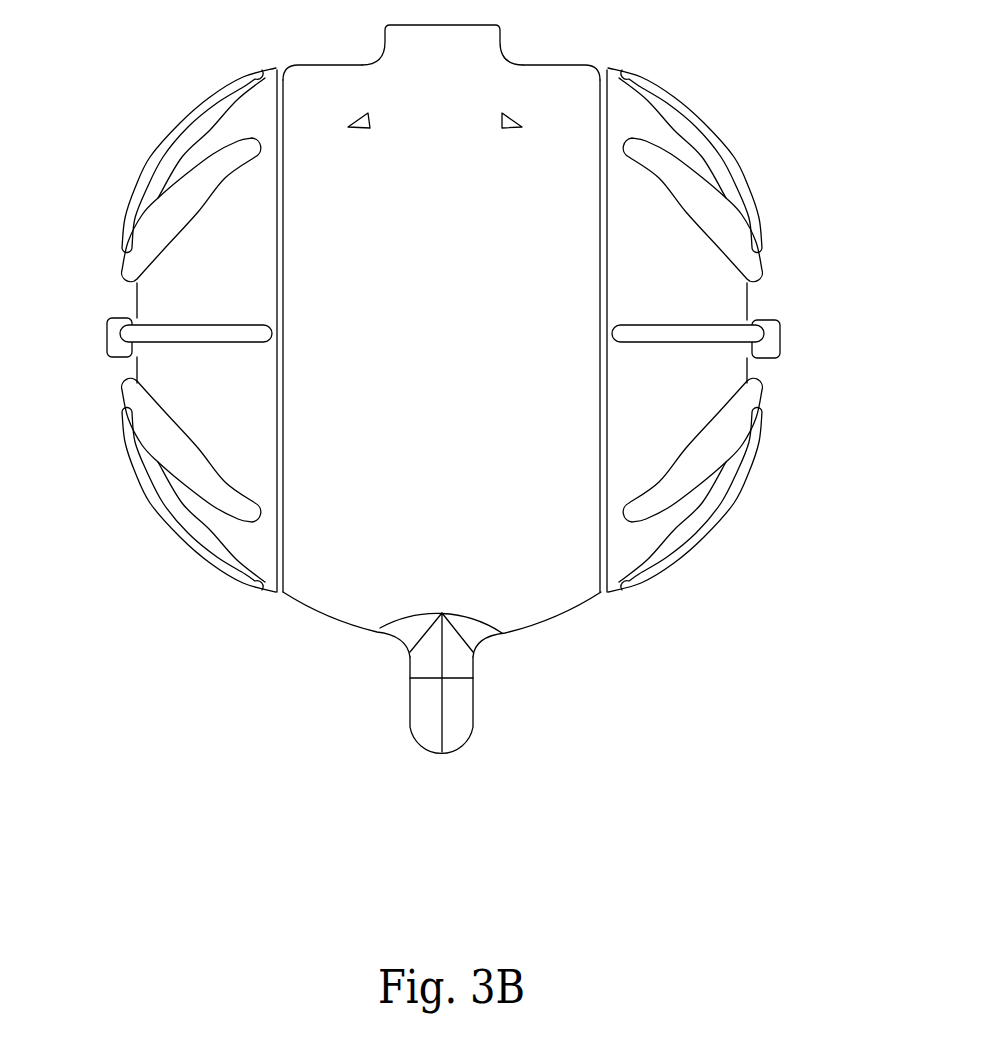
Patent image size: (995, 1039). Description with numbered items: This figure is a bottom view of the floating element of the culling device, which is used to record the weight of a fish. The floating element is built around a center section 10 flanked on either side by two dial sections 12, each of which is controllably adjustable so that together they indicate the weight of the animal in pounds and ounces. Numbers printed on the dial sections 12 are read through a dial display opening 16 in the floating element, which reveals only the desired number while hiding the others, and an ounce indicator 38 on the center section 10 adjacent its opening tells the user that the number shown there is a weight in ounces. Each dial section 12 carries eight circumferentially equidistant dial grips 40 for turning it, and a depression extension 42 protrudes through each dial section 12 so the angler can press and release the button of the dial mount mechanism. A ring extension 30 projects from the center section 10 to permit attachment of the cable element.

The center section 10 is at (518, 545).
The dial section 12 is at (506, 330).
The dial display opening 16 is at (517, 62).
The ring extension 30 is at (428, 712).
The ounce indicator 38 is at (563, 72).
The dial grip 40 is at (757, 443).
The depression extension 42 is at (108, 335).